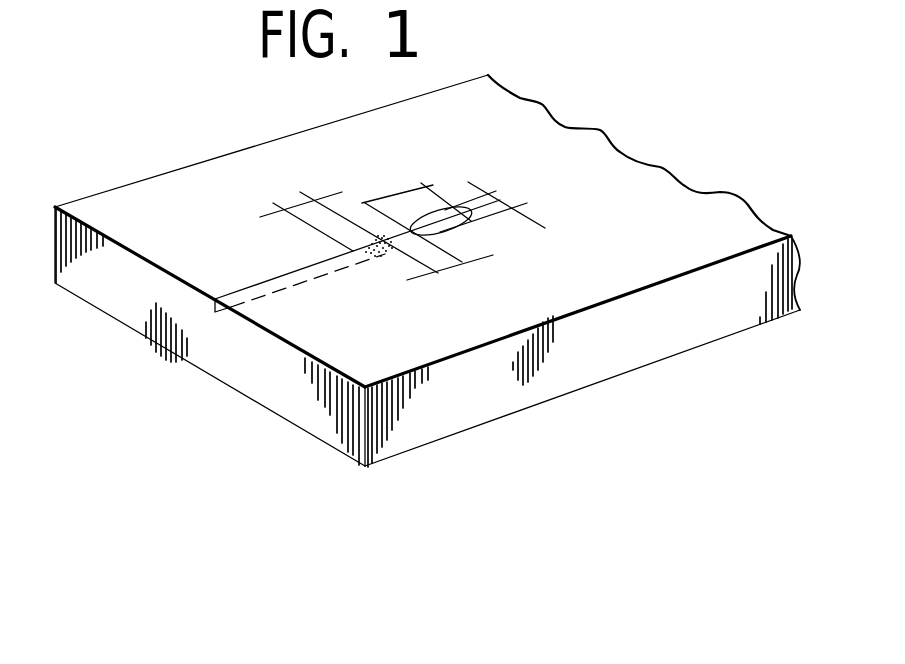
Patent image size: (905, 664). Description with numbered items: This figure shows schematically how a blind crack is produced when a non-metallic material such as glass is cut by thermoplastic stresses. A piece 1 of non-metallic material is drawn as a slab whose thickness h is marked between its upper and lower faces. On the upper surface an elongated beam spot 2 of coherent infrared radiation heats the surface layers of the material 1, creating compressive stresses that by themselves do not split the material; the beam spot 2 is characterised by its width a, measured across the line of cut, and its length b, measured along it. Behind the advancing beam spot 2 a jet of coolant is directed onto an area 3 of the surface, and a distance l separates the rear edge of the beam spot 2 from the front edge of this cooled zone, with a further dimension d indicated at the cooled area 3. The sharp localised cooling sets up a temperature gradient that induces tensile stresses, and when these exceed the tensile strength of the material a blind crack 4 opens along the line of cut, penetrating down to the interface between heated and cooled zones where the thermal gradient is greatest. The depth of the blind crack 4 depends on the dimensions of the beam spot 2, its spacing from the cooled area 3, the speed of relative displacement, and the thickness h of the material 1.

The piece of non-metallic material 1 is at (124, 192).
The beam spot 2 is at (475, 238).
The area on which the coolant stream falls 3 is at (378, 253).
The blind crack 4 is at (335, 281).
The coolant spot diameter d is at (287, 206).
The length of the beam spot b is at (403, 196).
The width of the beam spot a is at (497, 199).
The distance from the rear edge of the beam spot to the front edge of the cooled zon l is at (457, 276).
The thickness of the material h is at (657, 250).